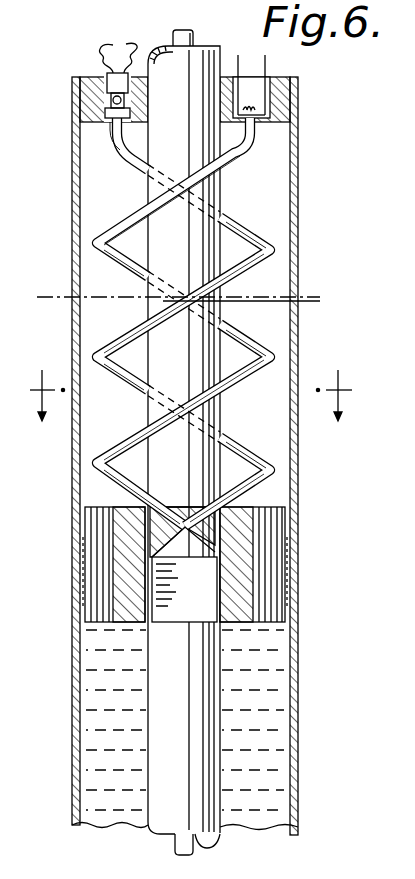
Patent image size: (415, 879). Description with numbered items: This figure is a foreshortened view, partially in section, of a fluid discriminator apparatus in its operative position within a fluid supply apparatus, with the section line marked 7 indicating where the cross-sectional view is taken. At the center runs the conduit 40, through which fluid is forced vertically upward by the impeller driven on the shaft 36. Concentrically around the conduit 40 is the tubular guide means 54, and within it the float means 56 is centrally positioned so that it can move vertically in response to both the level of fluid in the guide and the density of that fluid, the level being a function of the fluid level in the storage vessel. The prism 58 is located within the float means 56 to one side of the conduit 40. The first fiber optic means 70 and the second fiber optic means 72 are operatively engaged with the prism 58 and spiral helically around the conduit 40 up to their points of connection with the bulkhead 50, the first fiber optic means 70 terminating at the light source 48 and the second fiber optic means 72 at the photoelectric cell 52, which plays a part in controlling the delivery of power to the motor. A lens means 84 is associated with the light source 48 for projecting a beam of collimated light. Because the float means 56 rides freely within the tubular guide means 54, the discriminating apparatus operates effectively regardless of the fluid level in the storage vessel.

The shaft 36 is at (194, 33).
The conduit 40 is at (208, 803).
The light source 48 is at (80, 103).
The bulkhead 50 is at (83, 77).
The photoelectric cell 52 is at (298, 104).
The tubular guide means 54 is at (297, 708).
The float means 56 is at (273, 580).
The prism 58 is at (192, 547).
The first fiber optic means 70 is at (147, 163).
The second fiber optic means 72 is at (258, 142).
The lens means 84 is at (109, 123).
The section line 7- 7 is at (194, 373).